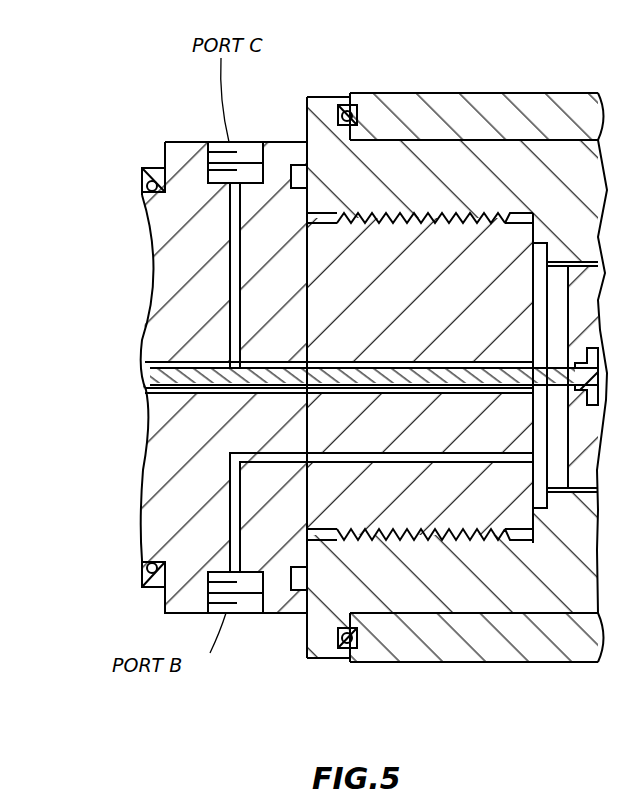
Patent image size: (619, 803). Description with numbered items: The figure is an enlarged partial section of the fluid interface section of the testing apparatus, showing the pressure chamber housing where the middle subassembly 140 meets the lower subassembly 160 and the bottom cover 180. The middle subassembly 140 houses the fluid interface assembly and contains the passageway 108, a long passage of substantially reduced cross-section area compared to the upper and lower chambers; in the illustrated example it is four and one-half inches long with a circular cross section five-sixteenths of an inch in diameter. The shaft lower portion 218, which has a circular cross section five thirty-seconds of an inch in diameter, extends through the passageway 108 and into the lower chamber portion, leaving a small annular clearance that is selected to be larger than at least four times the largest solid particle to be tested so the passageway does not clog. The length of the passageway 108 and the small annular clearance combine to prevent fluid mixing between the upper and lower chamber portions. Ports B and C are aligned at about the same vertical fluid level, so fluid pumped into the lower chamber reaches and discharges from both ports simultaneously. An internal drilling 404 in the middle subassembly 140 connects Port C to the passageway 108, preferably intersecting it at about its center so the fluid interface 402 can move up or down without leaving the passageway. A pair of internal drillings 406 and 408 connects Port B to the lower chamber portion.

The middle subassembly 140 is at (182, 152).
The lower subassembly 160 is at (321, 130).
The bottom cover 180 is at (486, 113).
The passageway 108 is at (410, 365).
The shaft lower portion 218 is at (277, 375).
The fluid interface 402 is at (232, 365).
The internal drilling 404 is at (232, 287).
The internal drilling 406 is at (241, 548).
The internal drilling 408 is at (397, 462).